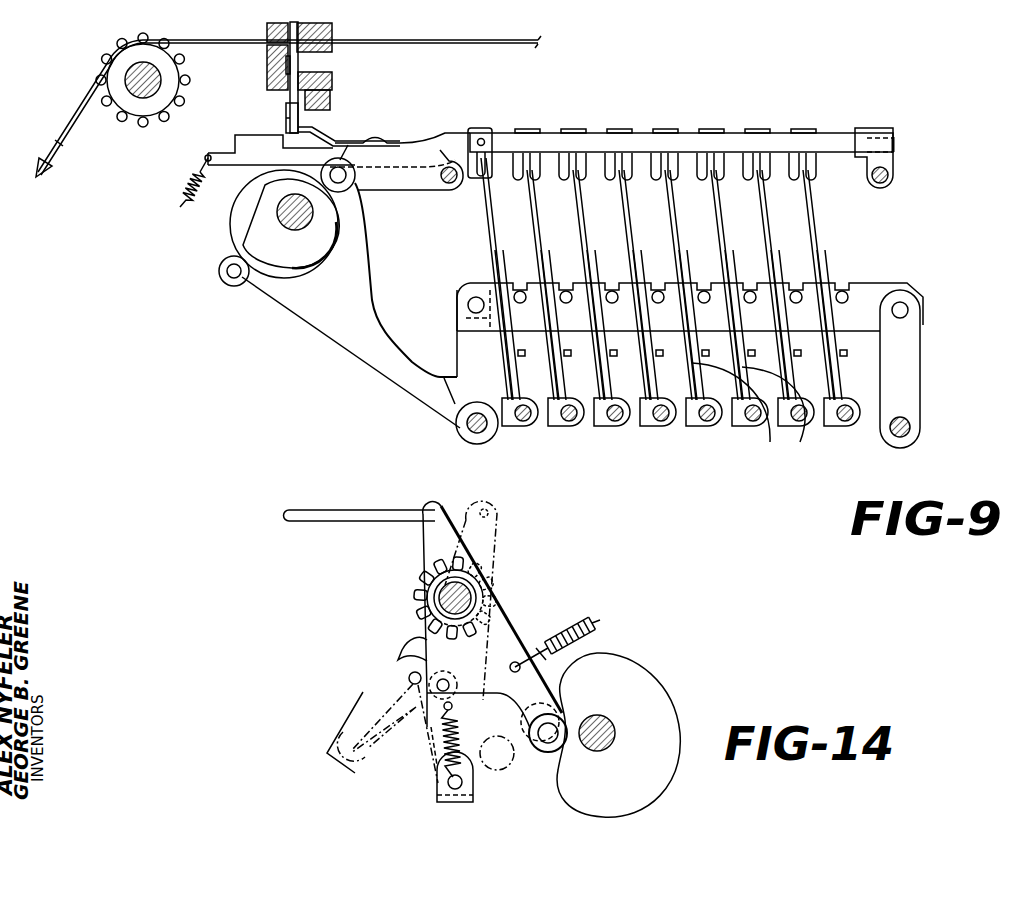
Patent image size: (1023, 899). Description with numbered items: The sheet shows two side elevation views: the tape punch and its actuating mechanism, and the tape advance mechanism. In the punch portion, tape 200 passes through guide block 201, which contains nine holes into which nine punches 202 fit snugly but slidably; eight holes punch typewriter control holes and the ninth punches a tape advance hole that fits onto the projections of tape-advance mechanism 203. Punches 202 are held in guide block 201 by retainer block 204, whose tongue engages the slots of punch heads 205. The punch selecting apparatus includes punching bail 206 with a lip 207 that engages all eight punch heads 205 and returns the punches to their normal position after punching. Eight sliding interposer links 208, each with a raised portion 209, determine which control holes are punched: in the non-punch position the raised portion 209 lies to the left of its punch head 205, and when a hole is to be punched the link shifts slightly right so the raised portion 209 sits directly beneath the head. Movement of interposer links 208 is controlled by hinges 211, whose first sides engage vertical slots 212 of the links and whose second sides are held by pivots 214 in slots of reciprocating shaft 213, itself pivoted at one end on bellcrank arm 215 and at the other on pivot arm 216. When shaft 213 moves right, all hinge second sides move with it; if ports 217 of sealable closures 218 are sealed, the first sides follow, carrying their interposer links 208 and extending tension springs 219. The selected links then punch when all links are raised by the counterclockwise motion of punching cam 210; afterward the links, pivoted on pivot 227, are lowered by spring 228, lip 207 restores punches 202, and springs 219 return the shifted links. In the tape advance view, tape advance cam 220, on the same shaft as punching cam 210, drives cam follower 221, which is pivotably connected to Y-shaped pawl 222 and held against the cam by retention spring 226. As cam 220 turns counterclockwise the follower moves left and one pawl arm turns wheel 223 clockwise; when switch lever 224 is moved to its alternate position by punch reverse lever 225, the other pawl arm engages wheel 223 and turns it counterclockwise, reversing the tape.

In FIG. 9, the tape 200 is at (427, 48).
In FIG. 9, the guide block 201 is at (333, 37).
In FIG. 9, the punches 202 is at (298, 62).
In FIG. 9, the tape-advance mechanism 203 is at (137, 93).
In FIG. 9, the retainer block 204 is at (333, 97).
In FIG. 9, the punch heads 205 is at (287, 115).
In FIG. 9, the punching bail 206 is at (400, 188).
In FIG. 9, the lip 207 is at (327, 130).
In FIG. 9, the interposer links 208 is at (755, 145).
In FIG. 9, the raised portion 209 is at (240, 143).
In FIG. 9, the punching cam 210 is at (256, 240).
In FIG. 9, the hinges 211 is at (703, 430).
In FIG. 9, the vertical slots 212 is at (665, 170).
In FIG. 9, the reciprocating shaft 213 is at (875, 297).
In FIG. 9, the pivots 214 is at (612, 292).
In FIG. 9, the bellcrank arm 215 is at (358, 358).
In FIG. 9, the pivot arm 216 is at (910, 390).
In FIG. 9, the ports 217 is at (850, 355).
In FIG. 9, the sealable closures 218 is at (800, 440).
In FIG. 9, the tension springs 219 is at (187, 200).
In FIG. 14, the tape advance cam 220 is at (650, 684).
In FIG. 14, the cam follower 221 is at (503, 643).
In FIG. 14, the Y-shaped pawl 222 is at (410, 653).
In FIG. 14, the wheel 223 is at (483, 580).
In FIG. 14, the switch lever 224 is at (440, 790).
In FIG. 14, the punch reverse lever 225 is at (375, 512).
In FIG. 14, the retention spring 226 is at (592, 625).
In FIG. 9, the pivot 227 is at (890, 178).
In FIG. 9, the spring 228 is at (880, 114).